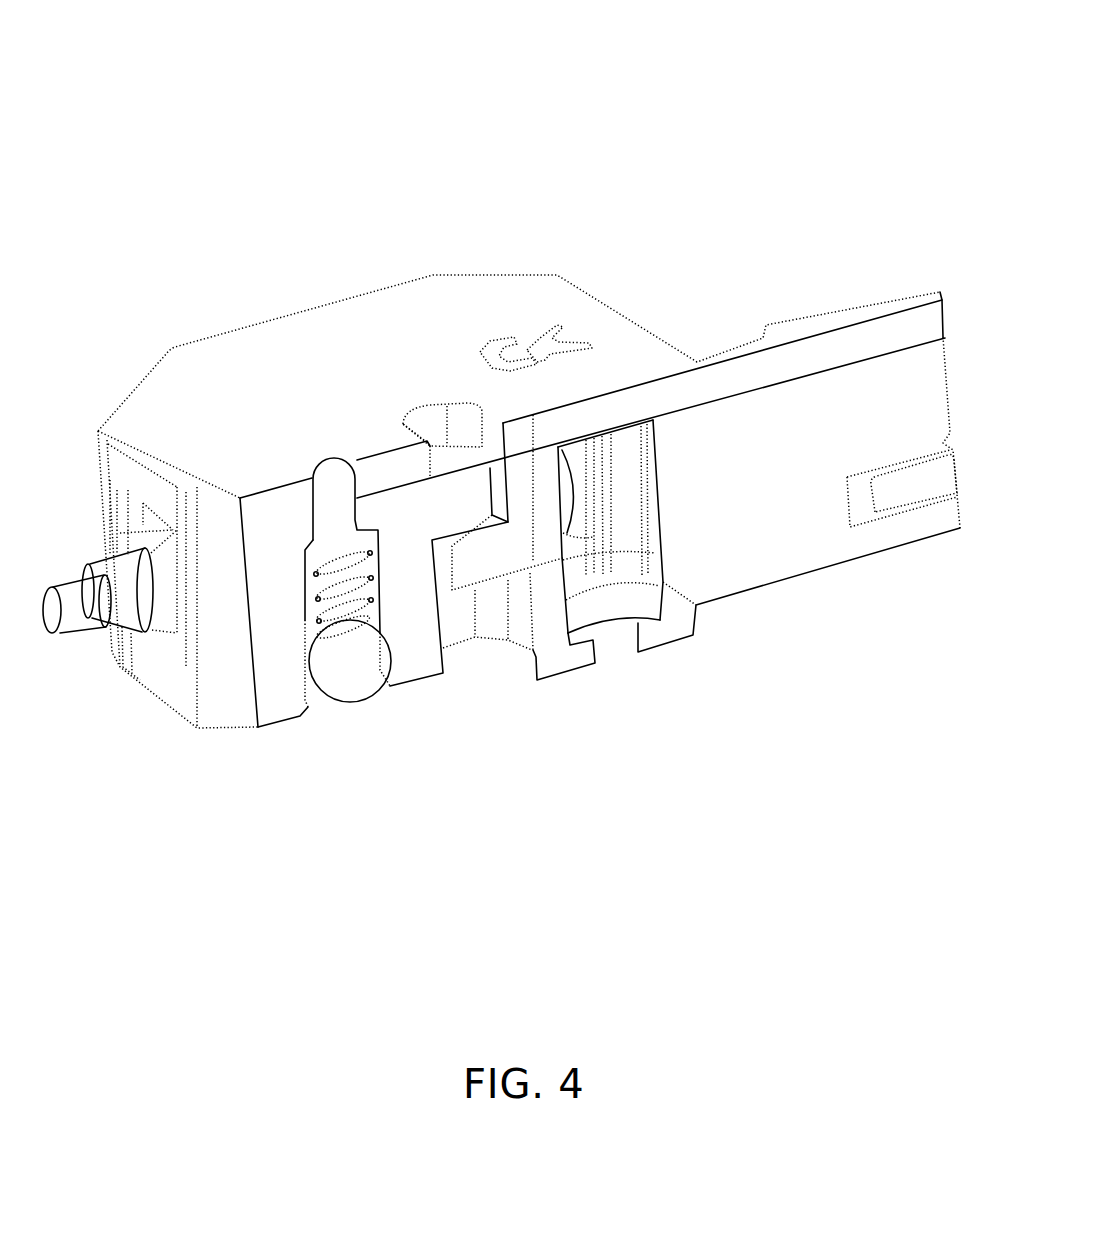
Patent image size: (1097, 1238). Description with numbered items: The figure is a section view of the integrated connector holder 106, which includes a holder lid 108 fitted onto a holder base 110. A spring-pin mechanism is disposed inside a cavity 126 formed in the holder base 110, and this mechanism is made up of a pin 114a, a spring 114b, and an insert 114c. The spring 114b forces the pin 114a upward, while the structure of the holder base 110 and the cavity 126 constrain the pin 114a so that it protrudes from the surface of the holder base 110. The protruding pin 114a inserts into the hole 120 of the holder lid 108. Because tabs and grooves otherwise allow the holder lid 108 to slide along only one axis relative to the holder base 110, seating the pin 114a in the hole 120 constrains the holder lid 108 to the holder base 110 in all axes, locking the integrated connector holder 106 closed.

The integrated connector holder 106 is at (501, 435).
The holder lid 108 is at (522, 293).
The holder base 110 is at (227, 708).
The pin 114a is at (333, 487).
The spring 114b is at (343, 597).
The insert 114c is at (352, 680).
The hole 120 is at (303, 468).
The cavity 126 is at (322, 708).